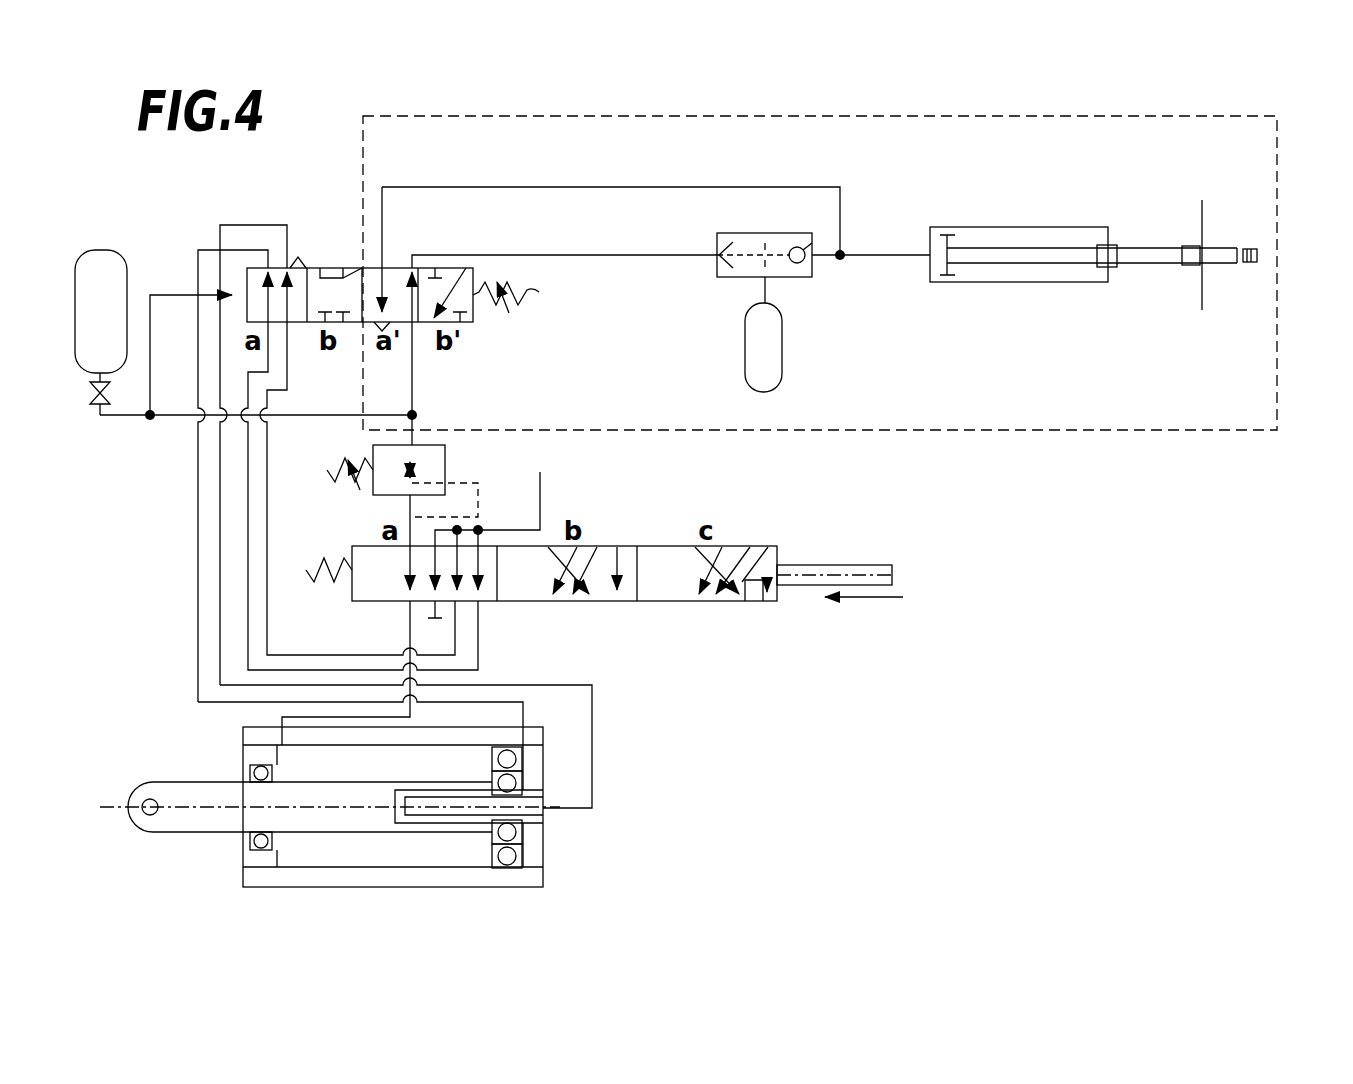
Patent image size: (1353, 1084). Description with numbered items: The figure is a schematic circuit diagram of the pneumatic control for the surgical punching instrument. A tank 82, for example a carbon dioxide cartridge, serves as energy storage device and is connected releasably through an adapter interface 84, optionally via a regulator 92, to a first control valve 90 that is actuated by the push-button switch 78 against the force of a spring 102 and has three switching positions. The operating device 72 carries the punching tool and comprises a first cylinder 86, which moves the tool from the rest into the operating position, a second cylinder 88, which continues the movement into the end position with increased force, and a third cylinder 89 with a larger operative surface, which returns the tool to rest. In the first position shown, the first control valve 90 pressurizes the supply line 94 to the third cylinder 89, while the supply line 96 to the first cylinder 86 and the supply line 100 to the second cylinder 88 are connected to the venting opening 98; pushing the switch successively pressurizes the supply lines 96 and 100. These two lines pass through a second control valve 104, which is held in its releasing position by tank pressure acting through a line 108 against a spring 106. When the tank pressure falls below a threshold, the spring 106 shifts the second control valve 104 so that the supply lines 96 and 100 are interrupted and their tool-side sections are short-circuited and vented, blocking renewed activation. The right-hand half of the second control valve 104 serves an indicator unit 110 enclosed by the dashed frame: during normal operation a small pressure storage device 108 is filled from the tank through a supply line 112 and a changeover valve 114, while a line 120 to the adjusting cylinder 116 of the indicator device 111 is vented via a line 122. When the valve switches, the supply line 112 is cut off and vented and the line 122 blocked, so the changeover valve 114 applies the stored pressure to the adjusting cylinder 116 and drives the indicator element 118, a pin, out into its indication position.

The operating device 72 is at (228, 840).
The push-button switch 78 is at (862, 571).
The tank 82 is at (109, 262).
The adapter interface 84 is at (95, 398).
The first cylinder 86 is at (405, 808).
The second cylinder 88 is at (523, 776).
The third cylinder 89 is at (387, 850).
The first control valve 90 is at (633, 540).
The regulator 92 is at (447, 456).
The supply line 94 is at (408, 626).
The supply line 96 is at (594, 735).
The venting opening 98 is at (540, 472).
The supply line 100 is at (524, 710).
The spring 102 is at (310, 562).
The second control valve 104 is at (325, 250).
The spring 106 is at (522, 298).
The pressure storage device 108 is at (158, 292).
The indicator unit 110 is at (1265, 108).
The indicator device 111 is at (1080, 338).
The supply line 112 is at (578, 254).
The changeover valve 114 is at (763, 244).
The adjusting cylinder 116 is at (1023, 284).
The indicator element 118 is at (1156, 272).
The line 120 is at (886, 254).
The line 122 is at (512, 186).